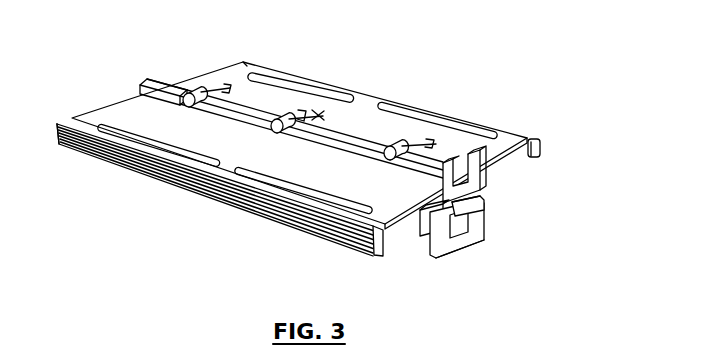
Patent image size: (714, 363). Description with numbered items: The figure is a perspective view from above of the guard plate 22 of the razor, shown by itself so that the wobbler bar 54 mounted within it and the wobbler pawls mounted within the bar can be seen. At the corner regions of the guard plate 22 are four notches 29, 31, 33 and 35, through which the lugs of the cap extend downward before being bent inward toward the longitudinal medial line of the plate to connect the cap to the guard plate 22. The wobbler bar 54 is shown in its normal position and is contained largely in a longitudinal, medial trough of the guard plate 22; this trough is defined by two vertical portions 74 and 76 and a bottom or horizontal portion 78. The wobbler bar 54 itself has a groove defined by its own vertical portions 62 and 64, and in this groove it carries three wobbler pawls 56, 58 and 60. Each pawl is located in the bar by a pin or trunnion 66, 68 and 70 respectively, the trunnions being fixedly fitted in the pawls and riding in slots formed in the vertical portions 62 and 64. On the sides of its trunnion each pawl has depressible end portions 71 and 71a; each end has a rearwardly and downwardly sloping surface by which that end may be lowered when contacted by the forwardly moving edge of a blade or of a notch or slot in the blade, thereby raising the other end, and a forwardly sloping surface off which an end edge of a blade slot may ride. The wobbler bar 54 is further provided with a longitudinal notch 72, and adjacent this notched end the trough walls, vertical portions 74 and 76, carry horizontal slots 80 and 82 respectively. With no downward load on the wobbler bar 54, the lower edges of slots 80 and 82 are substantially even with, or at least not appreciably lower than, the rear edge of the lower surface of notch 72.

The guard plate 22 is at (222, 211).
The notch 29 is at (534, 135).
The notch 31 is at (215, 197).
The notch 33 is at (59, 119).
The notch 35 is at (229, 49).
The wobbler bar 54 is at (155, 81).
The wobbler pawl 56 is at (311, 111).
The wobbler pawl 58 is at (322, 90).
The wobbler pawl 60 is at (443, 137).
The vertical portion 62 is at (304, 101).
The vertical portion 64 is at (139, 89).
The pin or trunnion 66 is at (186, 110).
The pin or trunnion 68 is at (277, 139).
The pin or trunnion 70 is at (388, 168).
The depressible end portion 71 is at (328, 81).
The depressible end portion 71a is at (296, 76).
The longitudinal notch 72 is at (499, 203).
The vertical portion 74 is at (488, 229).
The vertical portion 76 is at (429, 242).
The bottom or horizontal portion 78 is at (471, 253).
The horizontal slot 80 is at (504, 183).
The horizontal slot 82 is at (379, 253).